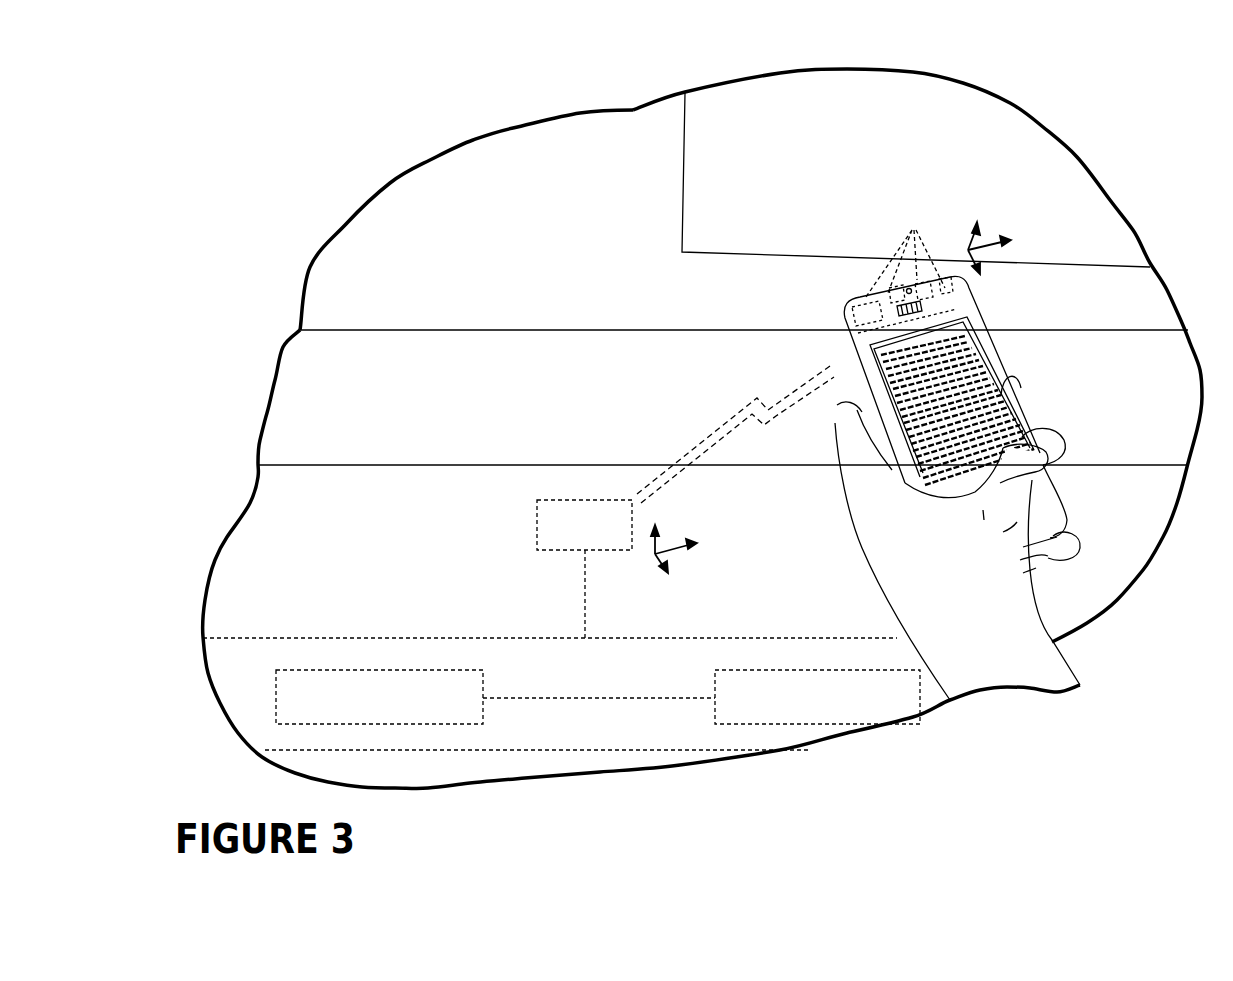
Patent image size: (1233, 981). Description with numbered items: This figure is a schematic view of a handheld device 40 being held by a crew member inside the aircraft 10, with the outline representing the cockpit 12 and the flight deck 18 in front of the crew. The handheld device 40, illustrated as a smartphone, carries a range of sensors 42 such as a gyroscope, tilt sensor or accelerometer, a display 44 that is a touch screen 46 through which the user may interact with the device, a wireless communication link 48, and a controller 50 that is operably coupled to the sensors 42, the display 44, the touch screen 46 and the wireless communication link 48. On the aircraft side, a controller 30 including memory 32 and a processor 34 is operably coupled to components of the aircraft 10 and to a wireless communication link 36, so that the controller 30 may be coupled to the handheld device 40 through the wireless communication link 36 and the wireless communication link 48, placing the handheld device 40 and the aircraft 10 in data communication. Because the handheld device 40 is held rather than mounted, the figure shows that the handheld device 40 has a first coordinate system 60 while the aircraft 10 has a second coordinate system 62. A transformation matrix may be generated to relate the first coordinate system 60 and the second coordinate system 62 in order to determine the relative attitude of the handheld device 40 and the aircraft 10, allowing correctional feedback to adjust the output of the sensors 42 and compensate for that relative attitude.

The aircraft 10 is at (330, 106).
The cockpit 12 is at (302, 276).
The flight deck 18 is at (275, 467).
The controller 30 is at (913, 653).
The memory 32 is at (462, 700).
The processor 34 is at (840, 687).
The wireless communication link 36 is at (580, 500).
The handheld device 40 is at (993, 349).
The sensors 42 is at (912, 230).
The display 44 is at (997, 392).
The touch screen 46 is at (990, 447).
The wireless communication link 48 is at (838, 308).
The controller 50 is at (957, 317).
The first coordinate system 60 is at (985, 240).
The second coordinate system 62 is at (653, 551).